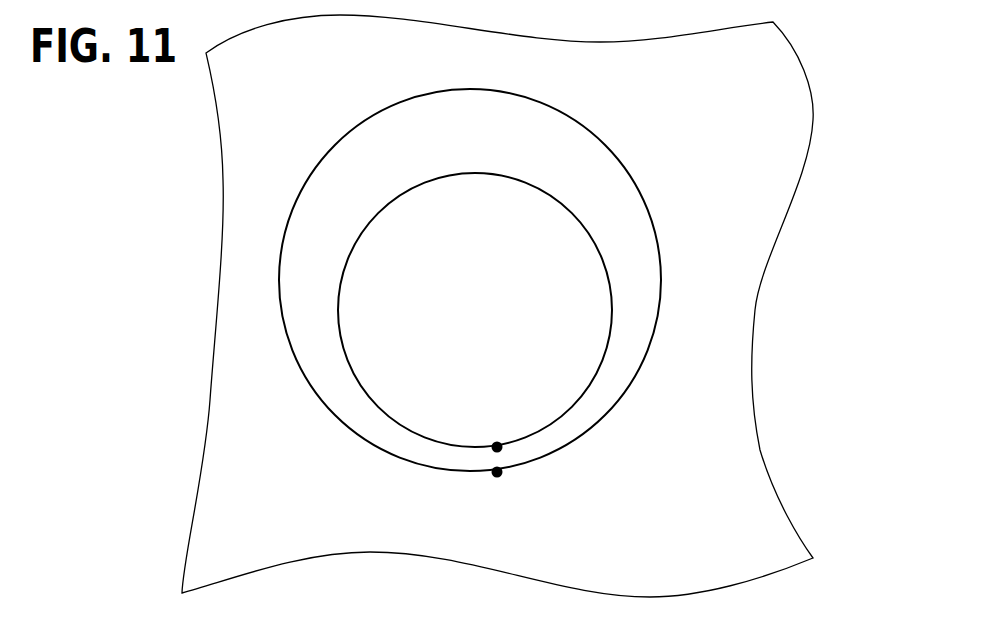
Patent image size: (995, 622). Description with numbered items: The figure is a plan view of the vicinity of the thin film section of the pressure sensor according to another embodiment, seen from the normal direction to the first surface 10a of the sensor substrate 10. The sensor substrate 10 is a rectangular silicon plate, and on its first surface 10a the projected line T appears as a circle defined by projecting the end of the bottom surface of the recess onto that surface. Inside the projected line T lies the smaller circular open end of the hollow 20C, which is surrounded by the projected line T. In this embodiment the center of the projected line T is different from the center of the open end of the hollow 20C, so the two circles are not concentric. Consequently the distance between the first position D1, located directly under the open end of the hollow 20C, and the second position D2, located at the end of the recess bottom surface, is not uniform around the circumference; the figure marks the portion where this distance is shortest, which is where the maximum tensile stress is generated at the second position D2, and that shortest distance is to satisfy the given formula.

The sensor substrate 10 is at (762, 377).
The first surface 10a is at (690, 448).
The projected line T is at (662, 310).
The hollow 20C is at (612, 303).
The first position D1 is at (493, 433).
The second position D2 is at (493, 488).